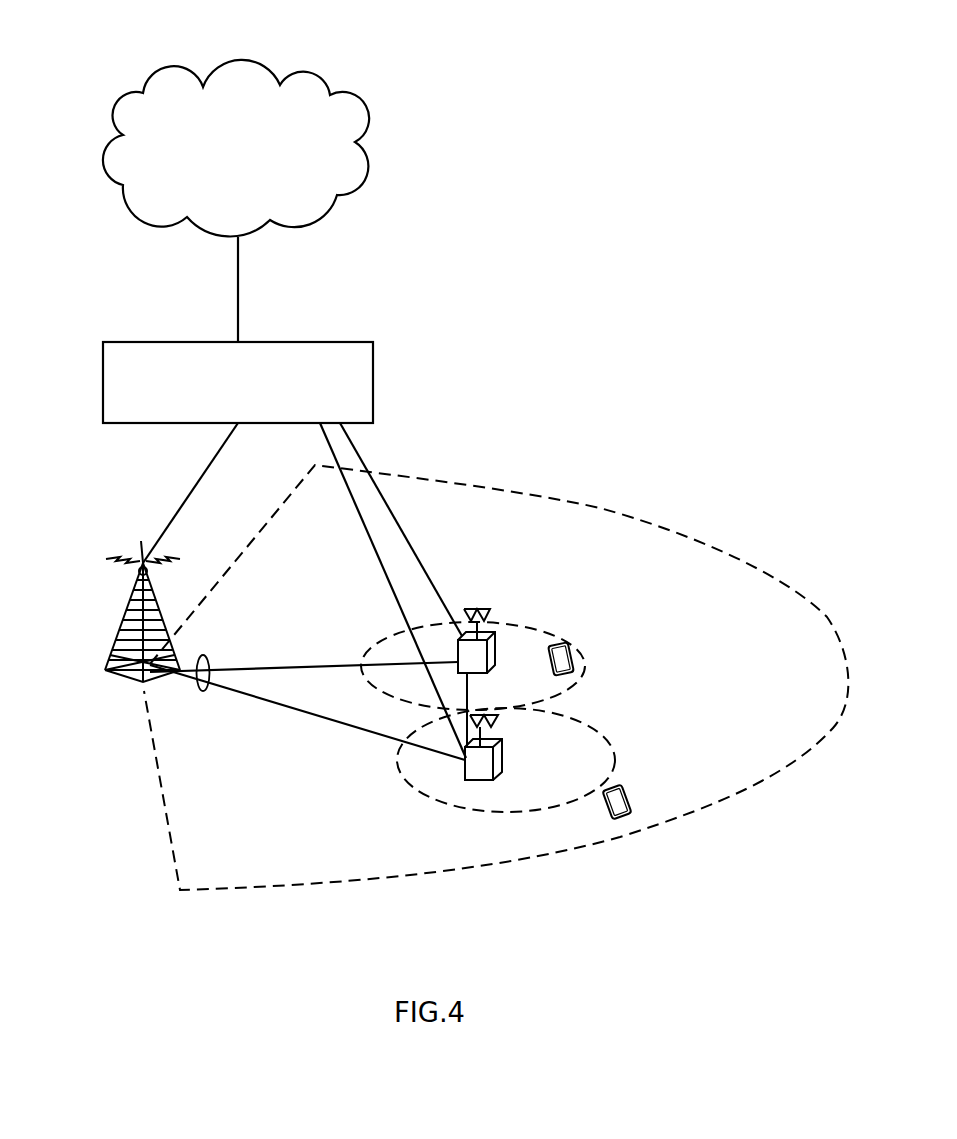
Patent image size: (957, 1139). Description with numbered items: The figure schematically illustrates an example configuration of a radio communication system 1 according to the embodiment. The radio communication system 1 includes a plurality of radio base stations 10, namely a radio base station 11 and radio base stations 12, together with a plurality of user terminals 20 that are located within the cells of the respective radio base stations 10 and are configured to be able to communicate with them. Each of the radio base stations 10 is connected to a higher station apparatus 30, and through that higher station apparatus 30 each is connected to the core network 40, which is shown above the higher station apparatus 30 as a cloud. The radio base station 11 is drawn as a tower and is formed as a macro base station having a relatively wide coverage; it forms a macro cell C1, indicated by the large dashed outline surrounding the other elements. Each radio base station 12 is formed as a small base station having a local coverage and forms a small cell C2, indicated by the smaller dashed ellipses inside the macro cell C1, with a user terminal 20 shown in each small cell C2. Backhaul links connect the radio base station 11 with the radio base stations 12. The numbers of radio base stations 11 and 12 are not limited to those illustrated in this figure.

The radio communication system 1 is at (602, 352).
The radio base station 10 is at (297, 700).
The radio base station 11 is at (124, 623).
The radio base station 12 is at (492, 653).
The user terminal 20 is at (565, 641).
The higher station apparatus 30 is at (308, 341).
The core network 40 is at (315, 73).
The macro cell C1 is at (667, 523).
The small cell C2 is at (521, 717).